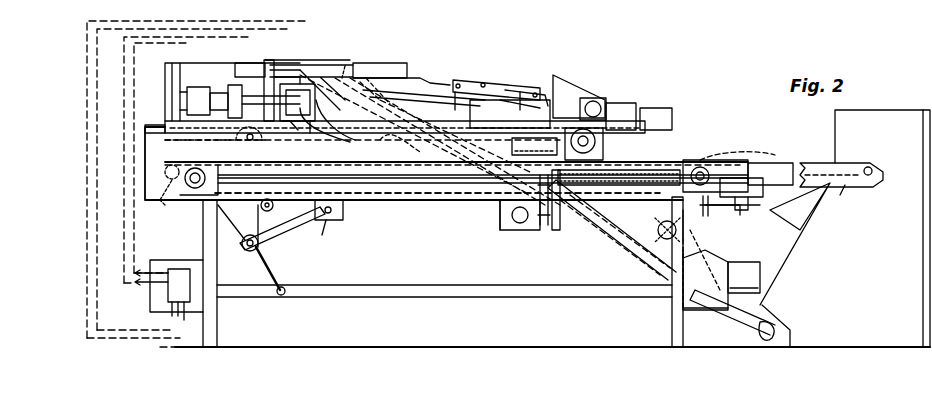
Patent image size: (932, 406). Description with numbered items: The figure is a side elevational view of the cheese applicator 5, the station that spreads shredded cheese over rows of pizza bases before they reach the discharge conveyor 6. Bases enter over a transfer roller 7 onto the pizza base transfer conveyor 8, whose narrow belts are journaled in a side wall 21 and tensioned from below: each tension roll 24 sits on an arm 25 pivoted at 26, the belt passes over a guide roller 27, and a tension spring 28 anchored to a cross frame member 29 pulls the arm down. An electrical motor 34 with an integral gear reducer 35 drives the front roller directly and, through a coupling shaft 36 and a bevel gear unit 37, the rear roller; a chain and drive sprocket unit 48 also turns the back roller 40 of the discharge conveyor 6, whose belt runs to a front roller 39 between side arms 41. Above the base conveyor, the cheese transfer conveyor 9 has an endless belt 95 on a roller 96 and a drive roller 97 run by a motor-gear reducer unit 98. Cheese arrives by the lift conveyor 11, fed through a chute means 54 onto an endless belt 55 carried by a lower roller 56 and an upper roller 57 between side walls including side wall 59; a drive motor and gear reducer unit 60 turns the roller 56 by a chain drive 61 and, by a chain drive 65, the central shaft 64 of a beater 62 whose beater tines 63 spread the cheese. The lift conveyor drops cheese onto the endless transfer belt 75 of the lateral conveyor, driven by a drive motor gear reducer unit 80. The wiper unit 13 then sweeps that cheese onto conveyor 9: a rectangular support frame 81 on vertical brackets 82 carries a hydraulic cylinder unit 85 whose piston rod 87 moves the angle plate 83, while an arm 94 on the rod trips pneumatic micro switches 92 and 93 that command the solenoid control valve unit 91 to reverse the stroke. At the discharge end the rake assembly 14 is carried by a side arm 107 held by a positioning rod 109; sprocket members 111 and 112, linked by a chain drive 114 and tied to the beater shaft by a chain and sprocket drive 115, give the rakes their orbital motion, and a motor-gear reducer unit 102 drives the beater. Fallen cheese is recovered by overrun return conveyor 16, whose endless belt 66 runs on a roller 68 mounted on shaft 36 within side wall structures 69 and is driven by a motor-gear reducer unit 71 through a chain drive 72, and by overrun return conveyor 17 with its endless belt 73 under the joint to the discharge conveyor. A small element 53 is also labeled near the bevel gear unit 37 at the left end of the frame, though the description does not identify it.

The cheese applicator 5 is at (396, 45).
The discharge conveyor 6 is at (826, 160).
The transfer roller 7 is at (160, 205).
The pizza base transfer conveyor 8 is at (400, 200).
The cheese transfer conveyor 9 is at (200, 136).
The lift conveyor 11 is at (410, 96).
The wiper unit 13 is at (300, 62).
The rake assembly 14 is at (512, 88).
The overrun return conveyor 16 is at (600, 215).
The overrun return conveyor 17 is at (725, 216).
The side wall 21 is at (438, 190).
The tension roll 24 is at (250, 252).
The arm 25 is at (295, 228).
The pivot 26 is at (328, 222).
The guide roller 27 is at (262, 206).
The tension spring 28 is at (285, 273).
The cross frame member 29 is at (281, 296).
The electrical motor 34 is at (763, 192).
The gear reducer 35 is at (702, 168).
The coupling shaft 36 is at (360, 200).
The bevel gear unit 37 is at (192, 190).
The front roller 39 is at (876, 166).
The back roller 40 is at (755, 156).
The side arm 41 is at (845, 192).
The chain and drive sprocket unit 48 is at (705, 218).
The gear 53 is at (172, 165).
The chute means 54 is at (815, 218).
The endless belt 55 is at (615, 262).
The roller 56 is at (778, 330).
The roller 57 is at (340, 62).
The side wall 59 is at (408, 75).
The drive motor and gear reducer unit 60 is at (760, 288).
The chain drive 61 is at (735, 322).
The beater 62 is at (698, 252).
The beater tines 63 is at (650, 262).
The central shaft 64 is at (658, 228).
The chain drive 65 is at (683, 292).
The endless belt 66 is at (650, 170).
The roller 68 is at (542, 228).
The side wall structure 69 is at (556, 230).
The motor-gear reducer unit 71 is at (505, 222).
The chain drive 72 is at (500, 208).
The endless belt 73 is at (748, 215).
The endless transfer belt 75 is at (300, 132).
The drive motor gear reducer unit 80 is at (190, 94).
The rectangular support frame 81 is at (405, 62).
The vertical bracket 82 is at (180, 104).
The angle plate 83 is at (268, 62).
The hydraulic cylinder unit 85 is at (176, 62).
The piston rod 87 is at (362, 70).
The solenoid control valve unit 91 is at (172, 292).
The pneumatic micro switch 92 is at (263, 140).
The pneumatic micro switch 93 is at (327, 127).
The arm 94 is at (305, 72).
The endless belt 95 is at (398, 146).
The roller 96 is at (240, 142).
The drive roller 97 is at (604, 146).
The motor-gear reducer unit 98 is at (520, 142).
The motor-gear reducer unit 102 is at (652, 108).
The side arm 107 is at (466, 80).
The positioning rod 109 is at (510, 114).
The sprocket member 111 is at (486, 82).
The sprocket member 112 is at (568, 100).
The chain drive 114 is at (538, 90).
The chain and sprocket drive 115 is at (620, 102).